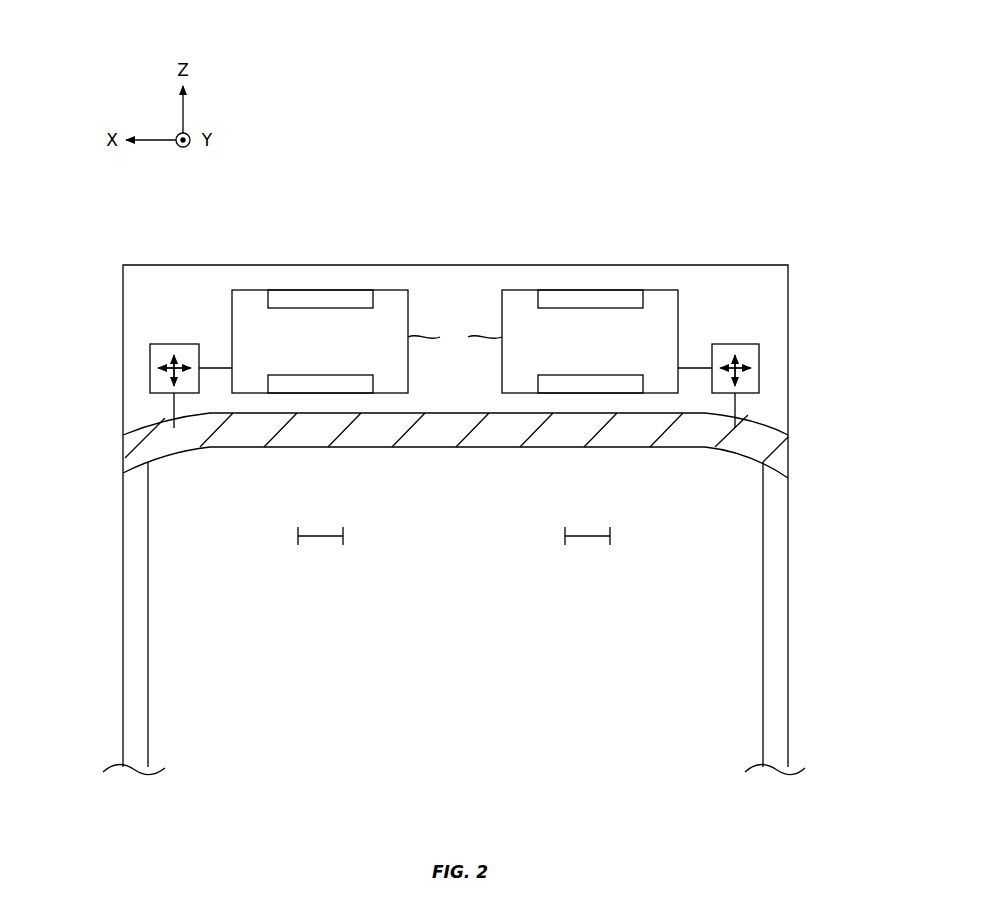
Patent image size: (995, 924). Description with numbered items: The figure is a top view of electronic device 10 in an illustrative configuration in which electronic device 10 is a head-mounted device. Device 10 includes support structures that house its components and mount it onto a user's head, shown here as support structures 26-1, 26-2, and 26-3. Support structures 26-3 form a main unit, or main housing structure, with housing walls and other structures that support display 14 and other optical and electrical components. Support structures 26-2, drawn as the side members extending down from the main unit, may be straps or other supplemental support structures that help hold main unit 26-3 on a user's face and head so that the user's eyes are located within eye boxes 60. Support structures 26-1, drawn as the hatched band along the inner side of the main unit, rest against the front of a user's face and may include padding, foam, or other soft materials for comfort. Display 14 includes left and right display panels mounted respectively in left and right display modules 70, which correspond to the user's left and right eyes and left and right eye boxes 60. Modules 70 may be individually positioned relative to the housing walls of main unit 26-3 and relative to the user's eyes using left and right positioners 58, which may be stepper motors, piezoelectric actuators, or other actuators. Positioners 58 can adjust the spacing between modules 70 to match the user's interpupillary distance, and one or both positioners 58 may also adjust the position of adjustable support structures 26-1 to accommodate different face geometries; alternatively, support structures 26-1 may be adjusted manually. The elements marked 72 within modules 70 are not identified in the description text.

The electronic device 10 is at (717, 152).
The display 14 is at (317, 298).
The support structures 26-1 is at (788, 447).
The support structures 26-2 is at (123, 582).
The support structures 26-3 is at (788, 313).
The positioners 58 is at (180, 343).
The eye boxes 60 is at (345, 532).
The display modules 70 is at (455, 337).
The display mounting structure 72 is at (322, 375).